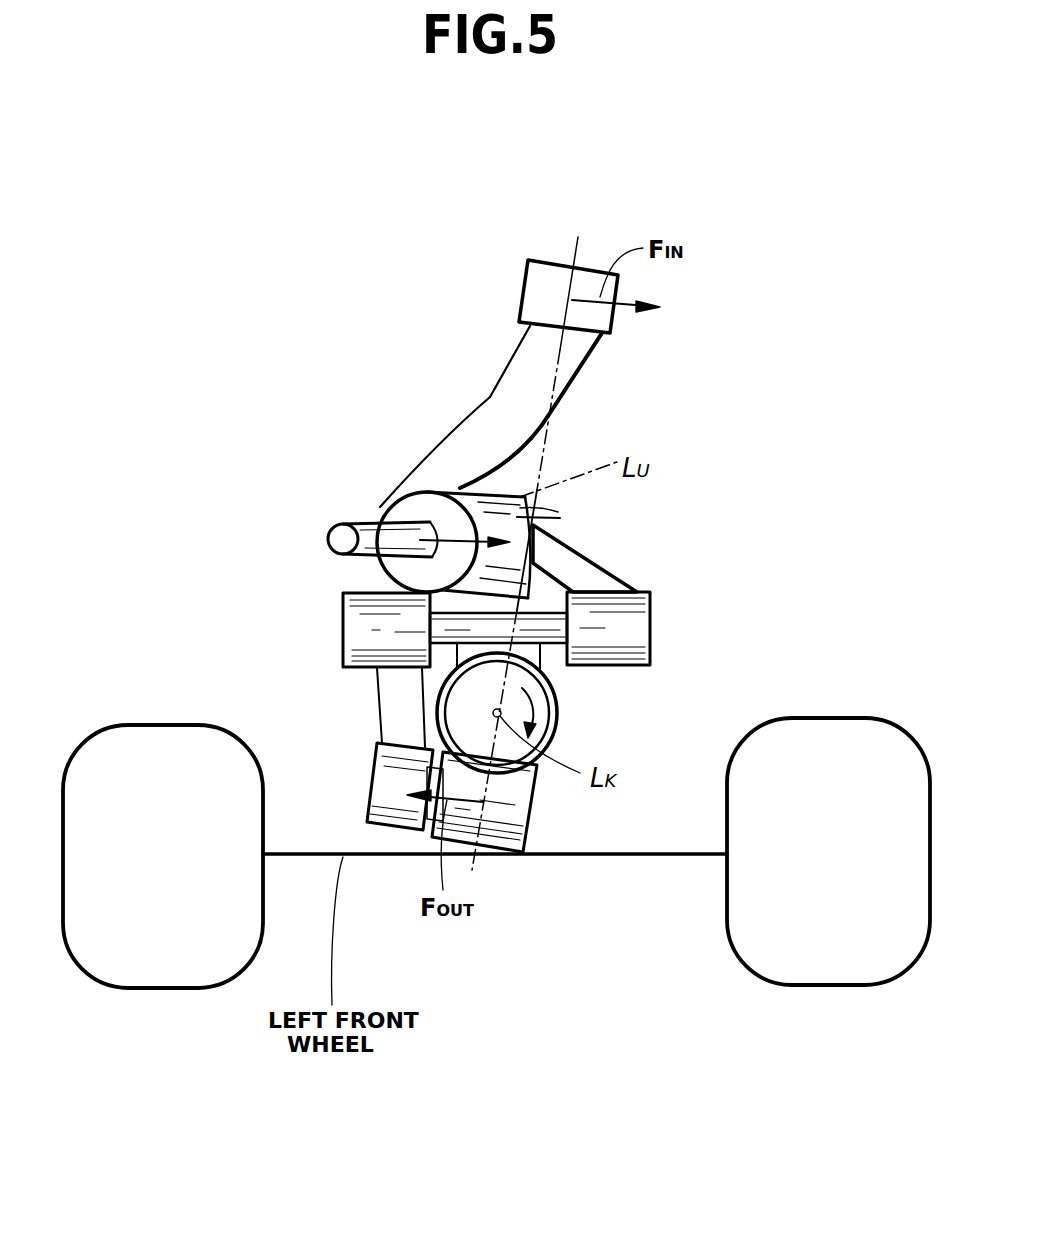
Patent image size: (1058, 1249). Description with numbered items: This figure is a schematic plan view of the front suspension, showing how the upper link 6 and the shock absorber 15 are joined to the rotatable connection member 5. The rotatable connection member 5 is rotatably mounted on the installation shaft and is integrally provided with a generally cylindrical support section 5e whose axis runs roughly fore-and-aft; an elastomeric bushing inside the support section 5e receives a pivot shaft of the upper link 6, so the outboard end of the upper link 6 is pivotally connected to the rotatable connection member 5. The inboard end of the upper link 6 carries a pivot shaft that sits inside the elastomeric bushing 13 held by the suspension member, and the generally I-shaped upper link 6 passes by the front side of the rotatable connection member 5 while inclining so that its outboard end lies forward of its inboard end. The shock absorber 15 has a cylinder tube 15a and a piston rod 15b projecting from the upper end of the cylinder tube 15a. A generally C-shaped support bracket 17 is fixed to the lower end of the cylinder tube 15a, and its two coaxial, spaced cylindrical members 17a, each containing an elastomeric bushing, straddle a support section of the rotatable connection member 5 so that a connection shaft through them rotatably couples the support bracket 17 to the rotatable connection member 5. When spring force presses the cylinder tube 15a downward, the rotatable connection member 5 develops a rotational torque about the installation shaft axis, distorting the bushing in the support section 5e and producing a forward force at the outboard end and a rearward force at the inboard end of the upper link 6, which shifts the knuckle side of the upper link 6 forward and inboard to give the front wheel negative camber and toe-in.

The elastomeric bushing 13 is at (540, 260).
The upper link 6 is at (492, 400).
The shock absorber 15 is at (493, 493).
The piston rod 15b is at (367, 525).
The cylinder tube 15a is at (547, 517).
The support bracket 17 is at (602, 570).
The cylindrical members 17a is at (343, 631).
The rotatable connection member 5 is at (538, 657).
The support section 5e is at (537, 810).